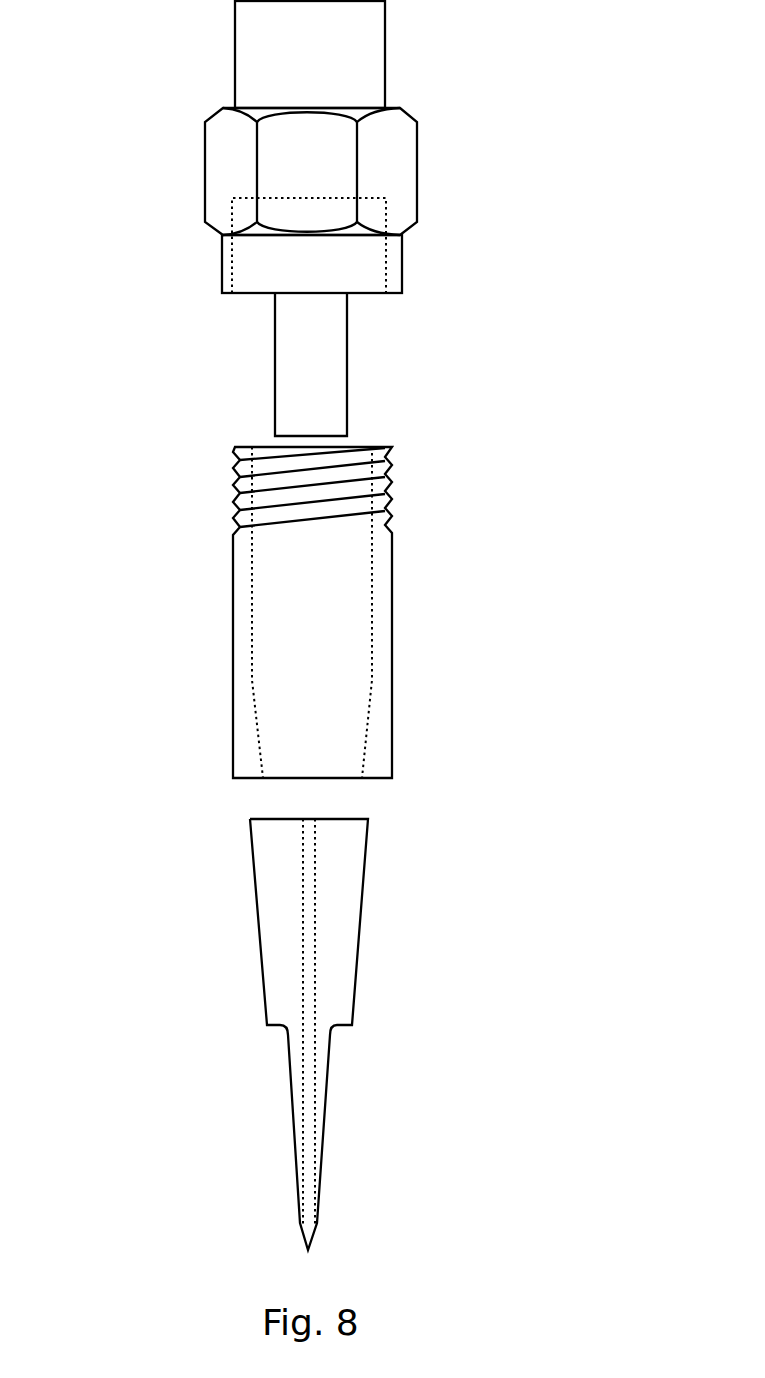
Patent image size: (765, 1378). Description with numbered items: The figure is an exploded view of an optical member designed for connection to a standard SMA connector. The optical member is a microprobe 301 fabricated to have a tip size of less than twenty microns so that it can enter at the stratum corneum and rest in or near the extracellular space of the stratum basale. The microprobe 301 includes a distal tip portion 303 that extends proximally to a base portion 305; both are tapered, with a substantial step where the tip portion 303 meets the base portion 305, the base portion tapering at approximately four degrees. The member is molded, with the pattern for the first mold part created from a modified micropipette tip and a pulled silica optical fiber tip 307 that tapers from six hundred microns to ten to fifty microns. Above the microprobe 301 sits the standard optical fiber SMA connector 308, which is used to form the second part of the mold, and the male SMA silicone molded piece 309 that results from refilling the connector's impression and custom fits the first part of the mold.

The microprobe 301 is at (313, 1030).
The distal tip portion 303 is at (295, 1139).
The base portion 305 is at (370, 837).
The pulled silica optical fiber tip 307 is at (320, 887).
The optical fiber SMA connector 308 is at (430, 147).
The male SMA silicone molded piece 309 is at (230, 710).